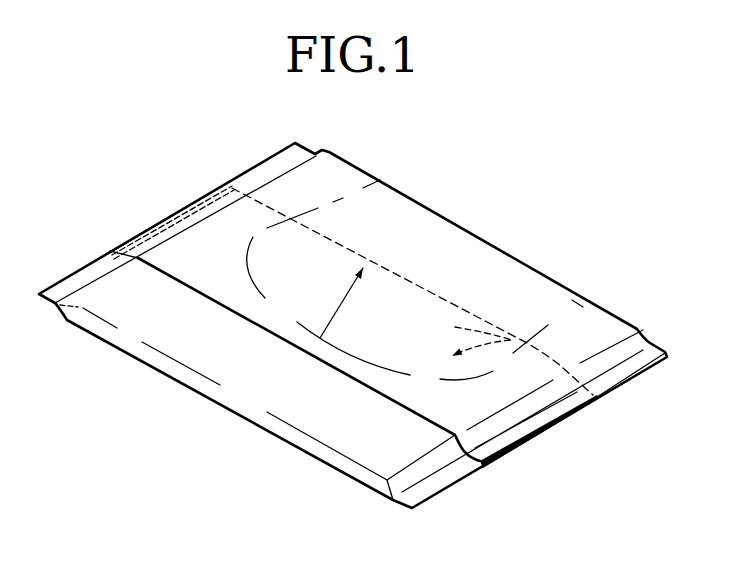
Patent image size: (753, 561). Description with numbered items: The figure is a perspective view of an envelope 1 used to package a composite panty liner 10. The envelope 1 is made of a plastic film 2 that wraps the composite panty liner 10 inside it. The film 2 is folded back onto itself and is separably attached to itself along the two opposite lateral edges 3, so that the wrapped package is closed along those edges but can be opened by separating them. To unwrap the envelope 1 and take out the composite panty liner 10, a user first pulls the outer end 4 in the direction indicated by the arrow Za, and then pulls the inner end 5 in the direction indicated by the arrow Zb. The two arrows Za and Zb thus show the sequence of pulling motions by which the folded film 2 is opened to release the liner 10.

The envelope 1 is at (562, 118).
The plastic film 2 is at (117, 292).
The lateral edges 3 is at (277, 162).
The outer end 4 is at (350, 368).
The inner end 5 is at (436, 292).
The composite panty liner 10 is at (358, 208).
The arrow Za is at (338, 300).
The arrow Zb is at (467, 334).